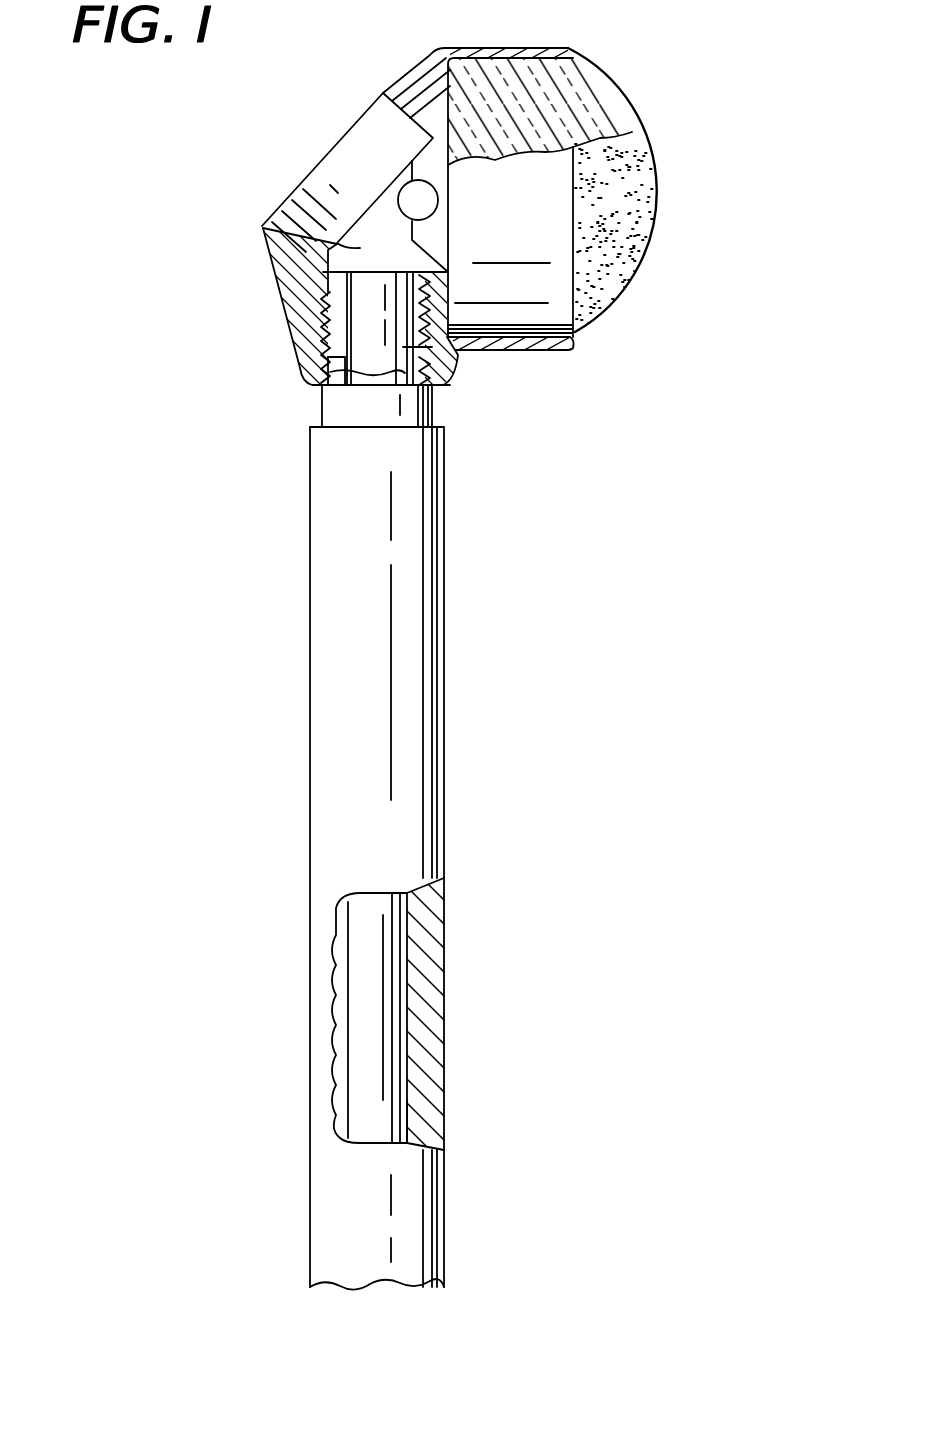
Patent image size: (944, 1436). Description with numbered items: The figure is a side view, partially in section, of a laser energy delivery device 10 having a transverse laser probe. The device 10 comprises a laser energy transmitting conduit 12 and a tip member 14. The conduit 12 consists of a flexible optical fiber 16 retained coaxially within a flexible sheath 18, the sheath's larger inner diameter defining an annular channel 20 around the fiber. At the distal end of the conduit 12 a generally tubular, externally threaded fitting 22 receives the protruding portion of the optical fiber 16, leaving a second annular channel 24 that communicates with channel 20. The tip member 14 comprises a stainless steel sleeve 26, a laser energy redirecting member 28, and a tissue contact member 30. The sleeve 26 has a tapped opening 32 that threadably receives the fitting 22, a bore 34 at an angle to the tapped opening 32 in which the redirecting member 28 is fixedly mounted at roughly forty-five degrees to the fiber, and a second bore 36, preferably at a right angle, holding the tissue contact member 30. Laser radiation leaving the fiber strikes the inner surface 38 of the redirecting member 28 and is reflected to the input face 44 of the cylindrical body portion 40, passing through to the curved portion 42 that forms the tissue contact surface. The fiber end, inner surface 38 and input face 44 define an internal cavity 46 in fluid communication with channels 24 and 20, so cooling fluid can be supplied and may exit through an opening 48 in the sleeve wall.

The laser energy delivery device 10 is at (222, 517).
The laser energy transmitting conduit 12 is at (298, 913).
The tip member 14 is at (246, 142).
The optical fiber 16 is at (302, 368).
The flexible sheath 18 is at (328, 595).
The annular channel 20 is at (405, 1020).
The fitting 22 is at (413, 350).
The annular channel 24 is at (457, 363).
The sleeve 26 is at (282, 291).
The laser energy redirecting member 28 is at (377, 135).
The tissue contact member 30 is at (668, 168).
The tapped opening 32 is at (327, 263).
The bore 34 is at (387, 96).
The second bore 36 is at (572, 53).
The inner surface 38 is at (362, 210).
The body portion 40 is at (568, 330).
The curved portion 42 is at (641, 263).
The input face 44 is at (442, 224).
The internal cavity 46 is at (262, 227).
The opening 48 is at (428, 197).